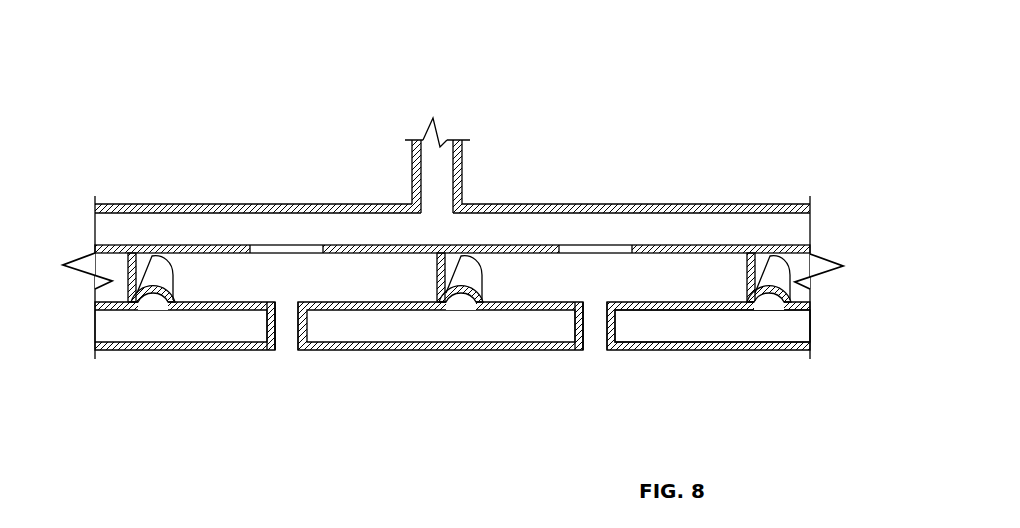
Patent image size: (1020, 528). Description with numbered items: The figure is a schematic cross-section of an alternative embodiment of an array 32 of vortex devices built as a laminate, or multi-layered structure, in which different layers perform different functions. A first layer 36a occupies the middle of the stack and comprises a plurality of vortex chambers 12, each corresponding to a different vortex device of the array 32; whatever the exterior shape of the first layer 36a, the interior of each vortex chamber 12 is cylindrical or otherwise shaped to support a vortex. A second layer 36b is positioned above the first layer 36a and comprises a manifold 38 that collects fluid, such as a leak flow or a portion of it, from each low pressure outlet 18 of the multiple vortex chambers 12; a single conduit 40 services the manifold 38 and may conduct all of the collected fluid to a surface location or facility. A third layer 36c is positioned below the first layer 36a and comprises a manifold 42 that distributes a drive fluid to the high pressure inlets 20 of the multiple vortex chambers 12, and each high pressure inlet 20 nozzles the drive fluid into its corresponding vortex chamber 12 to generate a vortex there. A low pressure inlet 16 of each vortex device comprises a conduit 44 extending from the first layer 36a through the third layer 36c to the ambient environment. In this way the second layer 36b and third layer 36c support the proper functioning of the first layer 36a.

The vortex chamber 12 is at (350, 305).
The low pressure inlet 16 is at (290, 353).
The low pressure outlet 18 is at (298, 248).
The high pressure inlet 20 is at (148, 310).
The array 32 is at (508, 75).
The first layer 36a is at (478, 289).
The second layer 36b is at (422, 164).
The third layer 36c is at (422, 329).
The manifold 38 is at (452, 202).
The conduit 40 is at (412, 172).
The manifold 42 is at (712, 325).
The conduit 44 is at (268, 323).